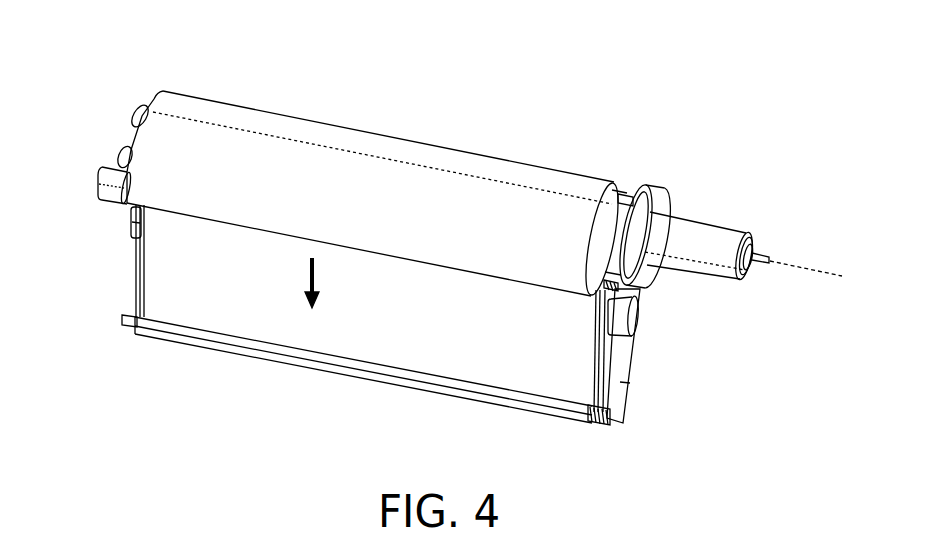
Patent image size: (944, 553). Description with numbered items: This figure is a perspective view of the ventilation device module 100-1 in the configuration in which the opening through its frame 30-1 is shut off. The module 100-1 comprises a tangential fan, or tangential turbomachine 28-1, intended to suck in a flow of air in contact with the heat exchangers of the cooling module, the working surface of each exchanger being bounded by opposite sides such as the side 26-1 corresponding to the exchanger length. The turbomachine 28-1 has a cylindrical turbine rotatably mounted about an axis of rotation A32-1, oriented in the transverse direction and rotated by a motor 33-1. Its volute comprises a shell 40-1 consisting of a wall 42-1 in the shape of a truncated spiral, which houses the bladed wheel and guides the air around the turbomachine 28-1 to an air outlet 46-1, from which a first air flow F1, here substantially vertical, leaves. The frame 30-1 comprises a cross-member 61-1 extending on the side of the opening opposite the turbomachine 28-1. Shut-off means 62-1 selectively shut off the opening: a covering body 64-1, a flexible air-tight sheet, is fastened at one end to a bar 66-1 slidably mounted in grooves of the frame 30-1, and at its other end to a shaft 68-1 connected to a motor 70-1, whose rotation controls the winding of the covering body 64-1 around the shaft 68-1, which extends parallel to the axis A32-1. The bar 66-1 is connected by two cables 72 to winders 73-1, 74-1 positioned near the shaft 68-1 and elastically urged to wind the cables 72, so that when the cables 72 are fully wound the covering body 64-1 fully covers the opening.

The module 100-1 is at (700, 137).
The tangential turbomachine 28-1 is at (440, 103).
The side of the working surface 26-1 is at (495, 155).
The wall 42-1 is at (245, 131).
The shell 40-1 is at (156, 134).
The motor 70-1 is at (108, 172).
The winder 73-1 is at (132, 227).
The cables 72 is at (136, 268).
The air outlet 46-1 is at (205, 223).
The bar 66-1 is at (130, 327).
The cross-member 61-1 is at (238, 348).
The covering body 64-1 is at (528, 342).
The shut-off means 62-1 is at (623, 441).
The frame 30-1 is at (630, 365).
The winder 74-1 is at (630, 320).
The shaft 68-1 is at (608, 283).
The motor 33-1 is at (718, 236).
The axis of rotation A32-1 is at (813, 270).
The first air flow F1 is at (318, 289).